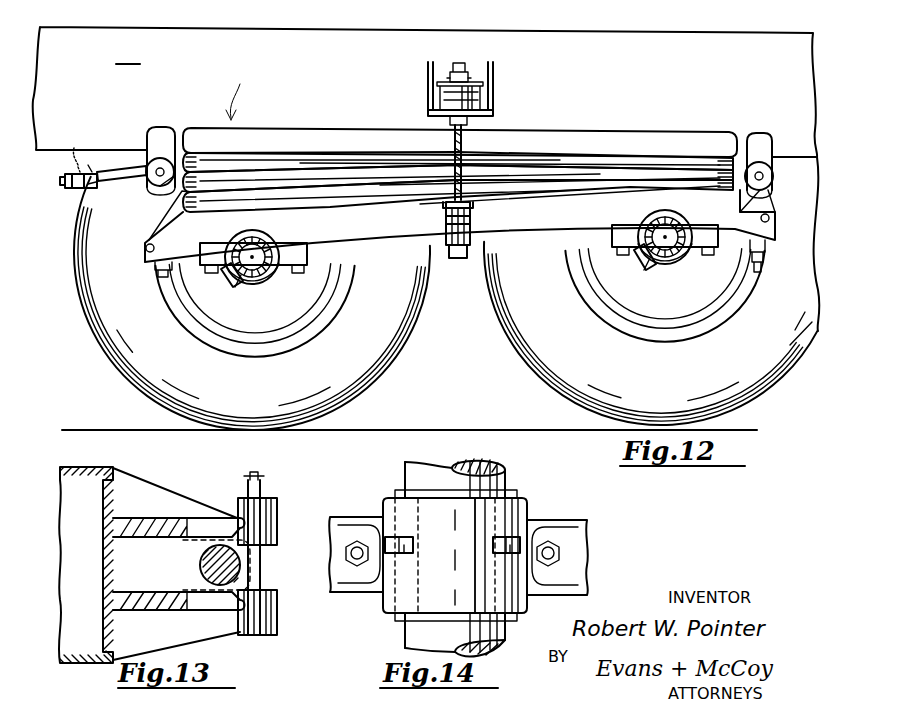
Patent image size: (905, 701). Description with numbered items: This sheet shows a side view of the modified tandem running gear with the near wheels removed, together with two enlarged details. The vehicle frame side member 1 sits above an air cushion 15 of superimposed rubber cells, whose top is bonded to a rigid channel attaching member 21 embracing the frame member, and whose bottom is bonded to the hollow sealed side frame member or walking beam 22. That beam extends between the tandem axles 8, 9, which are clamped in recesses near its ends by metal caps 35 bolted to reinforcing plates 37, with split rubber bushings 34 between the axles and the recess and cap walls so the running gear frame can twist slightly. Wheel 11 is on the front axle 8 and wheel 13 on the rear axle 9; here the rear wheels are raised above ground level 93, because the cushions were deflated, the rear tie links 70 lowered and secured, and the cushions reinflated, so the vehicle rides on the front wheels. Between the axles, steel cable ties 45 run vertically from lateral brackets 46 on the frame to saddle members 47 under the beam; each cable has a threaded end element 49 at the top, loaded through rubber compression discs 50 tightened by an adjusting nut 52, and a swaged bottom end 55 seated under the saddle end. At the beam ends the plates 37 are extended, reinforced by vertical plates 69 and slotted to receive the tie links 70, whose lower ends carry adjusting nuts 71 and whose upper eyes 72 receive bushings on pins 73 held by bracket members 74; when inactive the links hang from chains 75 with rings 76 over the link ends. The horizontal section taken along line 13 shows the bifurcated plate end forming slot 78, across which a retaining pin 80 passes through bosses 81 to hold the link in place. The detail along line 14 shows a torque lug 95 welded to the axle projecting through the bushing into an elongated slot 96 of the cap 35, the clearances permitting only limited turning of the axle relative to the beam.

In FIG. 12, the side member 1 is at (572, 66).
In FIG. 12, the axle 8 is at (272, 242).
In FIG. 12, the axle 9 is at (645, 220).
In FIG. 14, the axle 9 is at (500, 476).
In FIG. 12, the wheel 11 is at (396, 370).
In FIG. 12, the wheel 13 is at (512, 352).
In FIG. 12, the section line 14 is at (732, 345).
In FIG. 12, the air cushion 15 is at (350, 171).
In FIG. 12, the attaching member 21 is at (647, 133).
In FIG. 12, the side frame member 22 is at (544, 218).
In FIG. 13, the side frame member 22 is at (70, 664).
In FIG. 14, the side frame member 22 is at (580, 528).
In FIG. 12, the rubber bushing 34 is at (240, 248).
In FIG. 14, the rubber bushing 34 is at (388, 614).
In FIG. 12, the cap 35 is at (264, 284).
In FIG. 14, the cap 35 is at (530, 510).
In FIG. 12, the reinforcing plate 37 is at (170, 270).
In FIG. 13, the reinforcing plate 37 is at (186, 492).
In FIG. 12, the flexible inextensible element 45 is at (464, 144).
In FIG. 12, the bracket 46 is at (428, 95).
In FIG. 12, the saddle member 47 is at (444, 226).
In FIG. 12, the end element 49 is at (468, 66).
In FIG. 12, the rubber compression disc 50 is at (493, 96).
In FIG. 12, the adjusting nut 52 is at (448, 74).
In FIG. 12, the tie bottom end 55 is at (456, 260).
In FIG. 12, the vertical plate 69 is at (165, 252).
In FIG. 13, the vertical plate 69 is at (174, 532).
In FIG. 12, the tie link 70 is at (102, 182).
In FIG. 12, the adjusting nut 71 is at (92, 172).
In FIG. 12, the eye 72 is at (140, 182).
In FIG. 12, the pin 73 is at (164, 186).
In FIG. 12, the bracket member 74 is at (165, 130).
In FIG. 12, the chain 75 is at (70, 150).
In FIG. 12, the ring 76 is at (80, 190).
In FIG. 13, the slot 78 is at (262, 562).
In FIG. 13, the retaining pin 80 is at (262, 578).
In FIG. 13, the boss 81 is at (278, 524).
In FIG. 12, the ground level 93 is at (476, 430).
In FIG. 12, the lug 95 is at (232, 282).
In FIG. 14, the lug 95 is at (404, 544).
In FIG. 12, the slot 96 is at (648, 264).
In FIG. 14, the slot 96 is at (413, 556).